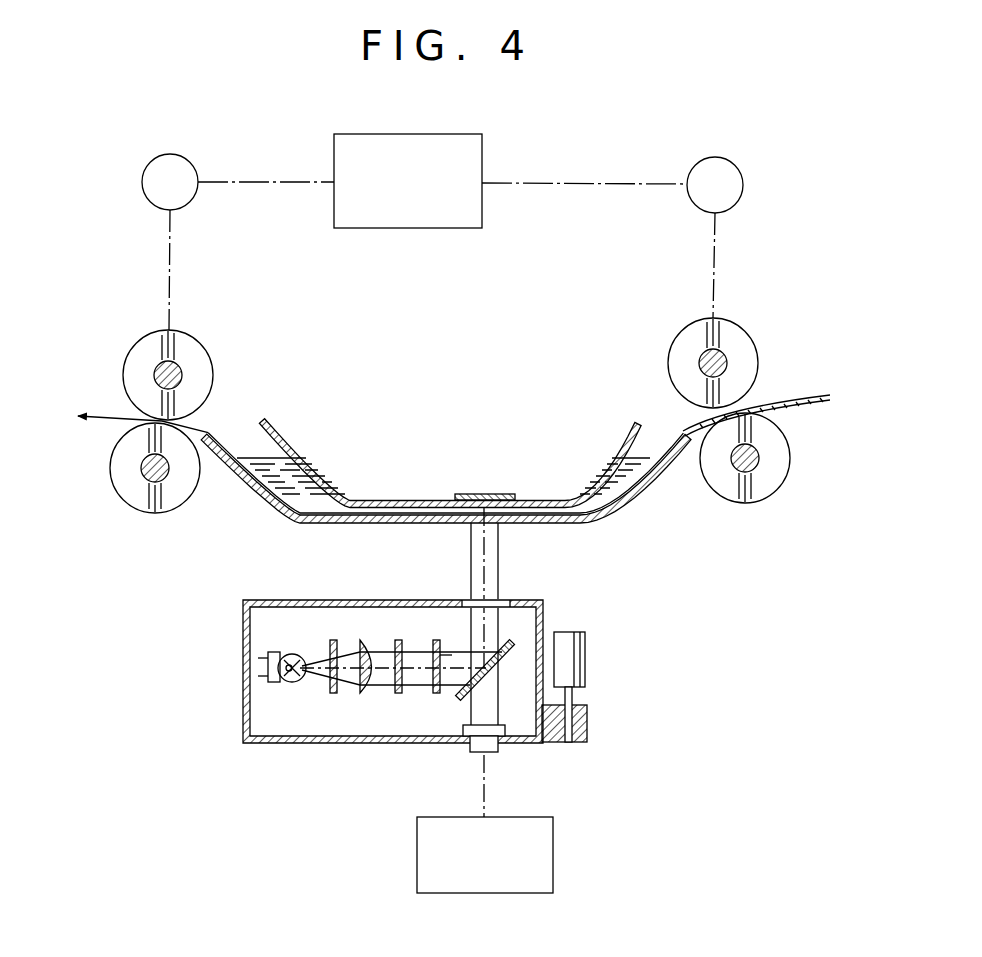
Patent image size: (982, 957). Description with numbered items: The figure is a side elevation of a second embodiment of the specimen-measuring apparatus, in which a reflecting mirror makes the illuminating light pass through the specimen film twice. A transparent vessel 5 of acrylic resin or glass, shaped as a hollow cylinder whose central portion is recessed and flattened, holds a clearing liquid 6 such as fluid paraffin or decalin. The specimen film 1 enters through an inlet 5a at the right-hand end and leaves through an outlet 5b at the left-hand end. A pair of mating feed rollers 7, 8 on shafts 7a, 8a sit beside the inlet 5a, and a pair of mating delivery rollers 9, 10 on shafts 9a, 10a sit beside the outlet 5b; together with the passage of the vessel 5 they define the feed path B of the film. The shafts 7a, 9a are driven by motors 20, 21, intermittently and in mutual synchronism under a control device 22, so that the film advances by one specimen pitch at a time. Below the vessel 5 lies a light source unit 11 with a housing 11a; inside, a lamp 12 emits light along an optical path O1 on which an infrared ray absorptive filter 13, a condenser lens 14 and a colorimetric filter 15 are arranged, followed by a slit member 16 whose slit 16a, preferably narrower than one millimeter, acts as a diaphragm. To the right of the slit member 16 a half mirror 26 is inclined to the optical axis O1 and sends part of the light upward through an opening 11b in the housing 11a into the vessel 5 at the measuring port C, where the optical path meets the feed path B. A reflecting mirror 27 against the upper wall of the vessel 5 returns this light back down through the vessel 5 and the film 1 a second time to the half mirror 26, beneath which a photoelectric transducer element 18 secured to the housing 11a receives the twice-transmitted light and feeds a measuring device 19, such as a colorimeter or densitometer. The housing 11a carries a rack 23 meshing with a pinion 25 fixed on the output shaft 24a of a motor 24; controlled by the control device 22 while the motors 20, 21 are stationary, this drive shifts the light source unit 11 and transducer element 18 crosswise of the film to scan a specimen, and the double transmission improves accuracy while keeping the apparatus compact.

The specimen film 1 is at (783, 403).
The transparent vessel 5 is at (397, 503).
The inlet 5a is at (658, 440).
The outlet 5b is at (236, 438).
The clearing liquid 6 is at (622, 501).
The feed roller 7 is at (738, 348).
The shaft 7a is at (701, 358).
The feed roller 8 is at (771, 490).
The shaft 8a is at (734, 472).
The delivery roller 9 is at (140, 348).
The shaft 9a is at (184, 362).
The delivery roller 10 is at (136, 504).
The shaft 10a is at (167, 480).
The light source unit 11 is at (238, 698).
The housing 11a is at (291, 743).
The opening 11b is at (490, 616).
The lamp 12 is at (292, 682).
The infrared ray absorptive filter 13 is at (333, 693).
The condenser lens 14 is at (362, 694).
The colorimetric filter 15 is at (399, 693).
The slit member 16 is at (437, 693).
The slit 16a is at (450, 653).
The photoelectric transducer element 18 is at (478, 750).
The measuring device 19 is at (553, 870).
The motor 20 is at (728, 166).
The motor 21 is at (186, 166).
The control device 22 is at (482, 168).
The rack 23 is at (540, 742).
The motor 24 is at (585, 652).
The output shaft 24a is at (572, 696).
The pinion 25 is at (587, 716).
The half mirror 26 is at (513, 645).
The reflecting mirror 27 is at (492, 494).
The feed path B is at (429, 502).
The measuring port C is at (498, 540).
The optical path O1 is at (348, 666).